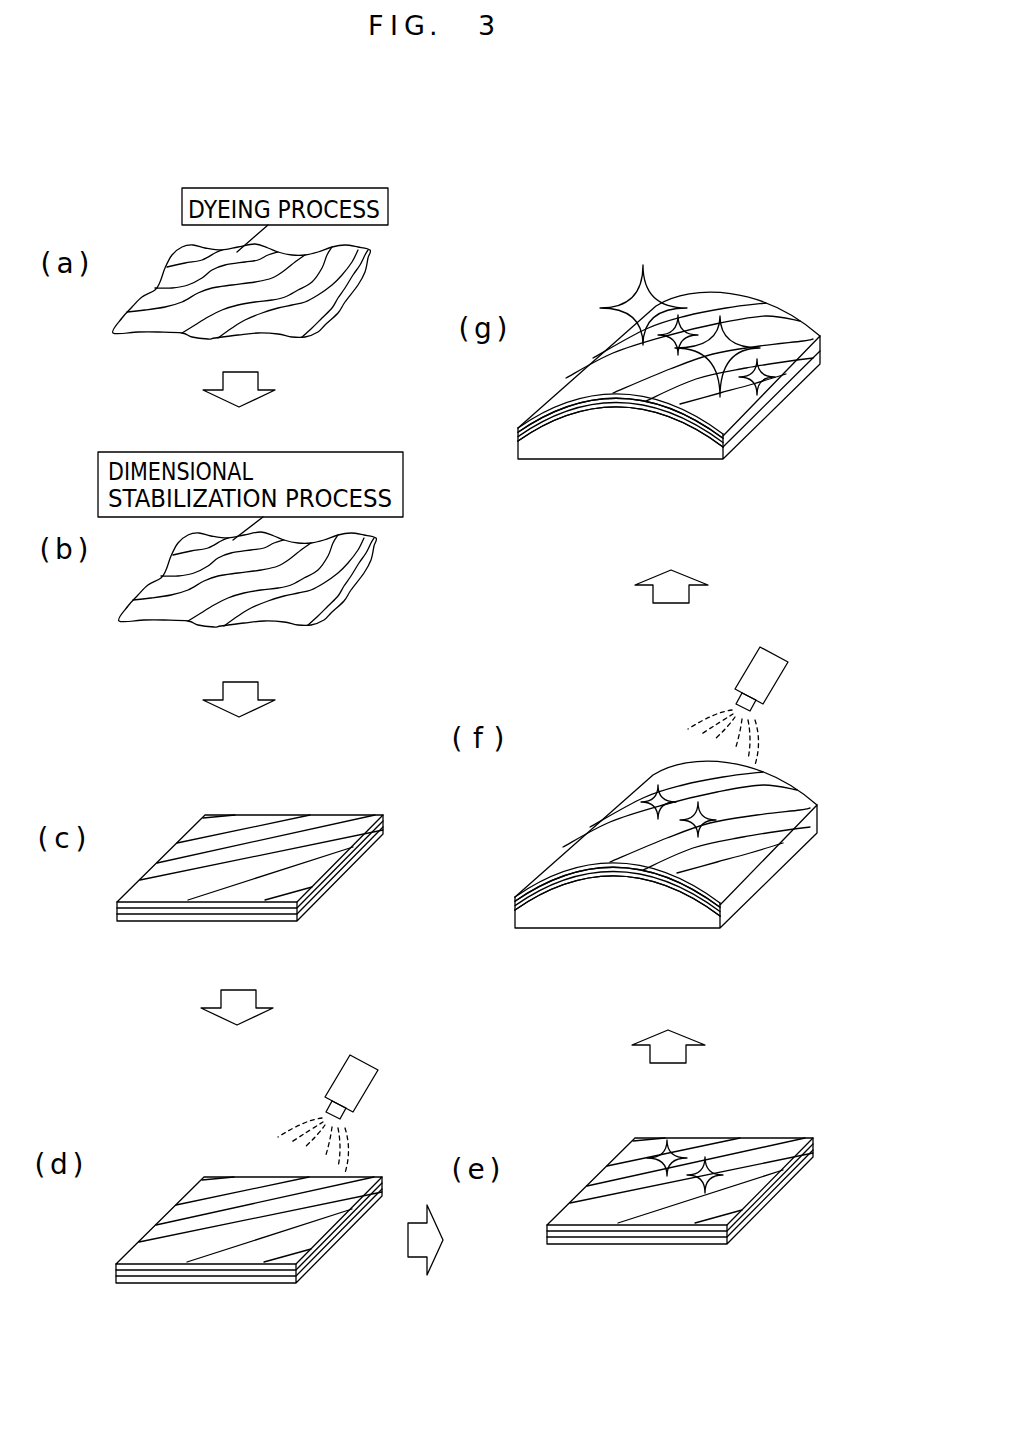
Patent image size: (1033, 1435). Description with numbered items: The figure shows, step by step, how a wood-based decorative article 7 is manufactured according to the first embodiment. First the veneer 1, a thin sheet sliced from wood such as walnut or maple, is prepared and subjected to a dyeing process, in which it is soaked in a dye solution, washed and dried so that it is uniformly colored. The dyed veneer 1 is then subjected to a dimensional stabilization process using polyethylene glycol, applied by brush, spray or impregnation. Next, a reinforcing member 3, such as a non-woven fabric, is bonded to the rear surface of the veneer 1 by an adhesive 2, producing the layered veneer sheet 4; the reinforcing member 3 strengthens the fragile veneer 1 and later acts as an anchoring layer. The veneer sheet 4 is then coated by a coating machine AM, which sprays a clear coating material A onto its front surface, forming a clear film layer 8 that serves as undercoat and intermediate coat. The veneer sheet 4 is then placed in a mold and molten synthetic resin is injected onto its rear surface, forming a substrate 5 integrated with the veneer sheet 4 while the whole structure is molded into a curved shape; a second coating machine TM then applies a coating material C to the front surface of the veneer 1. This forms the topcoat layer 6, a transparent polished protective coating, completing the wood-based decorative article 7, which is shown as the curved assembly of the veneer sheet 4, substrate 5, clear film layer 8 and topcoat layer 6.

The veneer 1 is at (615, 1278).
The adhesive 2 is at (142, 912).
The reinforcing member 3 is at (190, 917).
The veneer sheet 4 is at (464, 868).
The substrate 5 is at (697, 923).
The topcoat layer 6 is at (713, 303).
The wood-based decorative article 7 is at (764, 296).
The clear film layer 8 is at (620, 1165).
The clear coating material A is at (297, 1126).
The coating machine AM is at (333, 1082).
The coating material C is at (704, 713).
The coating machine TM is at (737, 676).